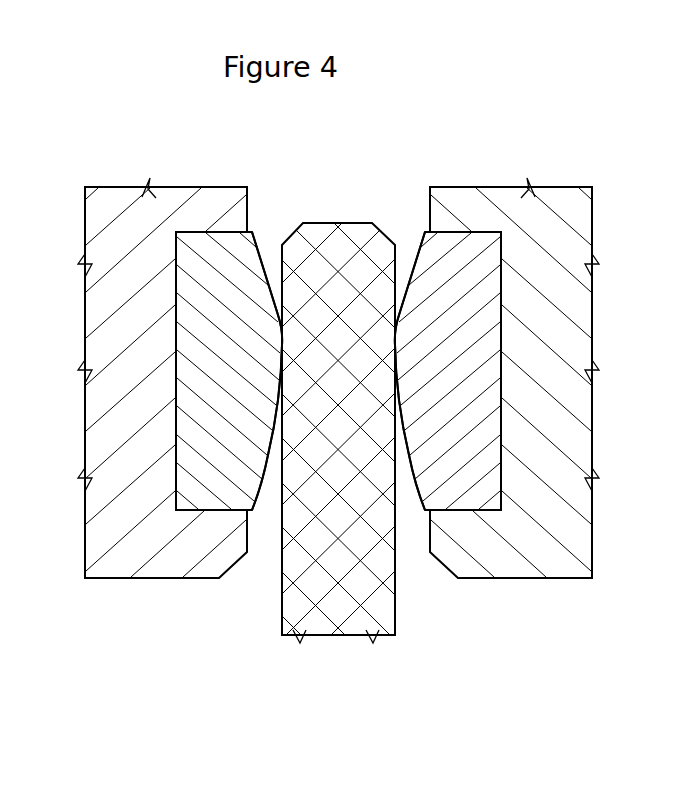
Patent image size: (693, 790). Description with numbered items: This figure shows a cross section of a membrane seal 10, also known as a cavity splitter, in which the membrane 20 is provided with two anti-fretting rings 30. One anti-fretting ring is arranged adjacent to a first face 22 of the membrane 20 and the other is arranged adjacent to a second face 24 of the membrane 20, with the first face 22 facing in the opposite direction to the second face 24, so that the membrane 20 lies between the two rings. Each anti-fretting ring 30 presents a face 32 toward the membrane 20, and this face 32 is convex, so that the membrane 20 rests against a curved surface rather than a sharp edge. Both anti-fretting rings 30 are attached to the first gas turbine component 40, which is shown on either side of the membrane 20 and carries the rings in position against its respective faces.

The membrane seal 10 is at (470, 123).
The membrane 20 is at (340, 612).
The first face 22 is at (280, 618).
The second face 24 is at (400, 618).
The anti-fretting ring 30 is at (187, 253).
The face 32 is at (275, 302).
The first gas turbine component 40 is at (183, 578).